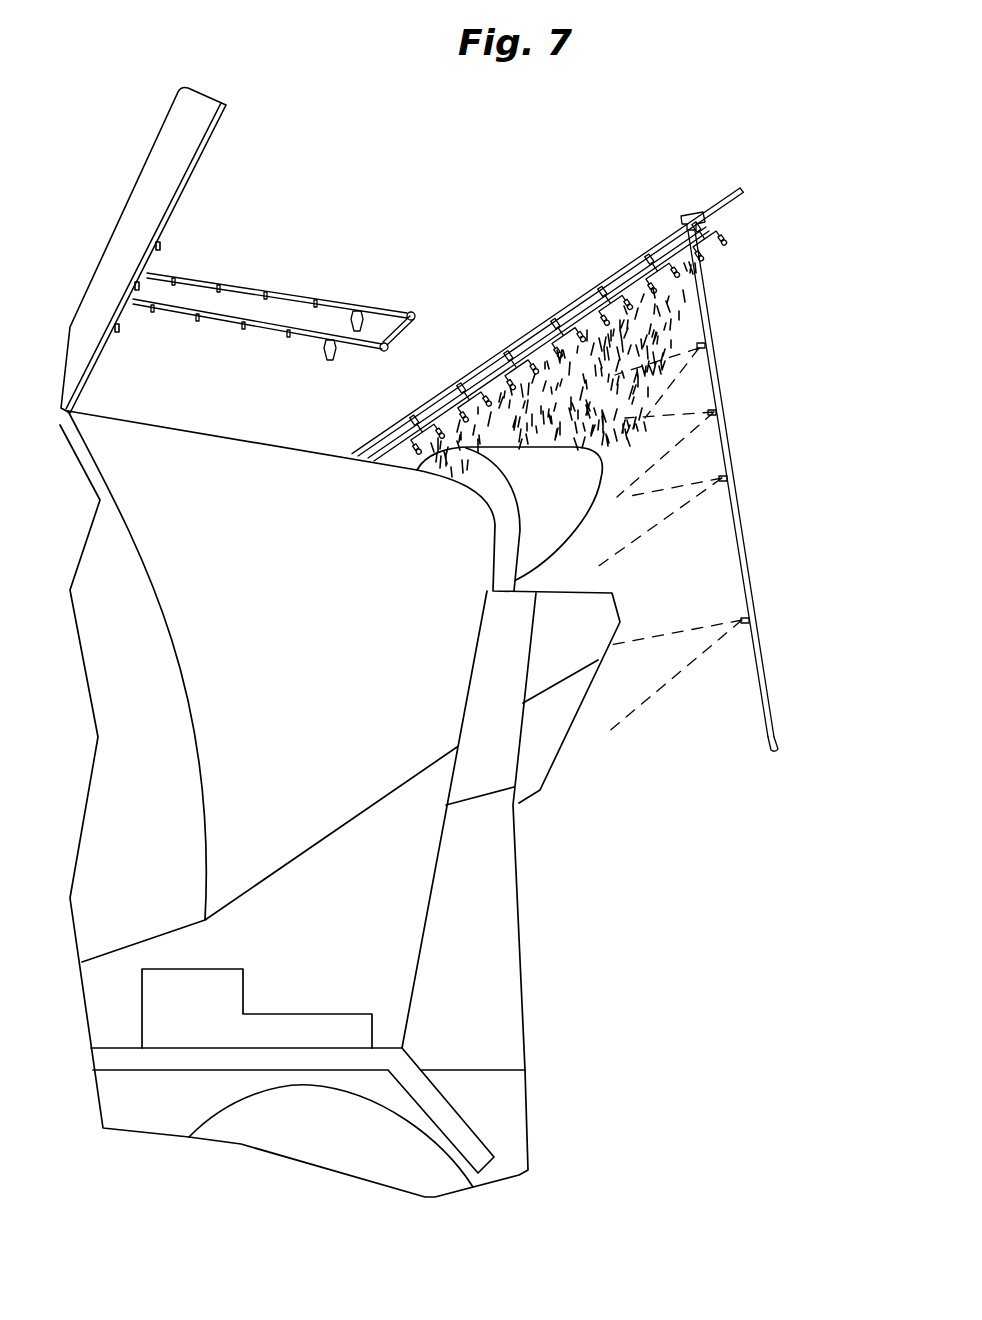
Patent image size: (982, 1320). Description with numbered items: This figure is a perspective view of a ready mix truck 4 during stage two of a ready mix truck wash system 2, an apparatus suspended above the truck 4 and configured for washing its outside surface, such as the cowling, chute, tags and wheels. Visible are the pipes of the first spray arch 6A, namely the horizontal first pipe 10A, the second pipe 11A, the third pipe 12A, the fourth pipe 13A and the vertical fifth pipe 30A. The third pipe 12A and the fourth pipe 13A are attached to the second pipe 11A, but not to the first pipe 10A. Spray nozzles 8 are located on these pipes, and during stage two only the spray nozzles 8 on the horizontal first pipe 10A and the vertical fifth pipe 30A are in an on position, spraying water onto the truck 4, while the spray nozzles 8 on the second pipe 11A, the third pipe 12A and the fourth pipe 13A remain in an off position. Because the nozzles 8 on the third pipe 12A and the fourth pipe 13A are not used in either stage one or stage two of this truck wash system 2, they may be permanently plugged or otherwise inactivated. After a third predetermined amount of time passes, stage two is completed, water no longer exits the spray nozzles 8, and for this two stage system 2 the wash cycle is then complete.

The ready mix truck wash system 2 is at (383, 128).
The ready mix truck 4 is at (142, 912).
The first spray arch 6A is at (577, 274).
The spray nozzles 8 is at (613, 287).
The first pipe 10A is at (587, 293).
The second pipe 11A is at (176, 208).
The third pipe 12A is at (243, 282).
The fourth pipe 13A is at (243, 282).
The fifth pipe 30A is at (719, 383).